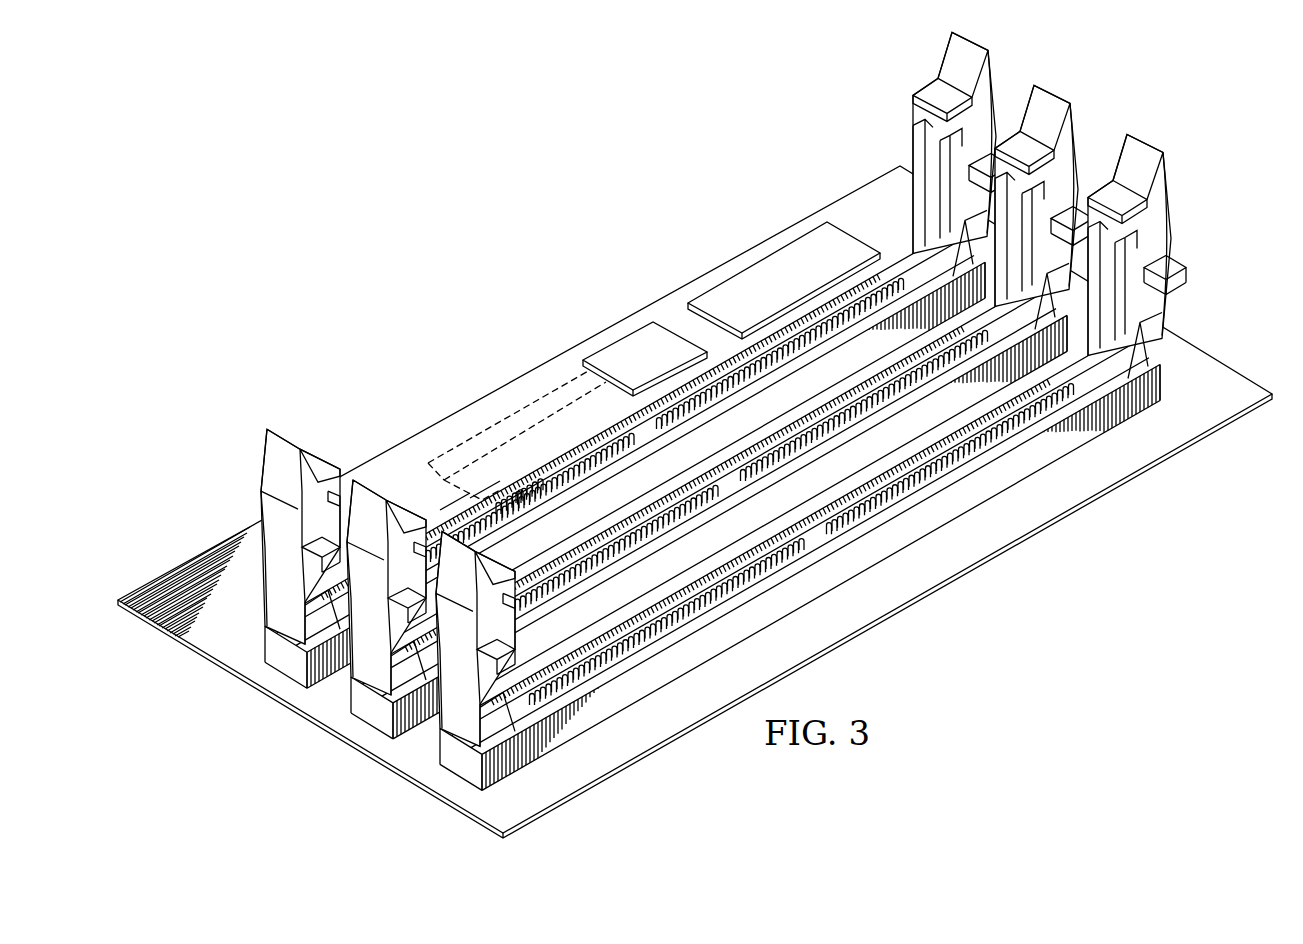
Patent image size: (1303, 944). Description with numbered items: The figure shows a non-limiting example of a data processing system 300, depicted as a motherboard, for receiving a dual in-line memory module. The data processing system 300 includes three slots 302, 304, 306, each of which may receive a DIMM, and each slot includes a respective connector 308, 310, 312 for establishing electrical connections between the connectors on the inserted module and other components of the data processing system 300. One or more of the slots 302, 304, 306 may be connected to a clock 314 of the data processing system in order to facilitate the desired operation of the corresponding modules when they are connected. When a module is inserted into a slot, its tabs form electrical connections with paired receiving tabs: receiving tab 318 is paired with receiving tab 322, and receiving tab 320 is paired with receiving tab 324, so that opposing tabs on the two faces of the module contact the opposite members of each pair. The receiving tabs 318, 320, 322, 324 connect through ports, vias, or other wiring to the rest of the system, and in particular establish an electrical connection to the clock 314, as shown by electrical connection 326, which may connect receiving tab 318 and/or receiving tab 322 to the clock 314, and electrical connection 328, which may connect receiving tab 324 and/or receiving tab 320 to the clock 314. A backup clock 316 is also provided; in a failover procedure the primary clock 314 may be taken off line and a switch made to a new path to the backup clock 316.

The data processing system 300 is at (455, 274).
The slot 302 is at (581, 367).
The slot 304 is at (666, 419).
The slot 306 is at (756, 470).
The connector 308 is at (630, 434).
The connector 310 is at (723, 482).
The connector 312 is at (822, 545).
The clock 314 is at (627, 348).
The backup clock 316 is at (773, 265).
The receiving tab 318 is at (498, 525).
The receiving tab 320 is at (515, 512).
The receiving tab 322 is at (457, 507).
The receiving tab 324 is at (476, 500).
The electrical connection 326 is at (560, 380).
The electrical connection 328 is at (536, 393).